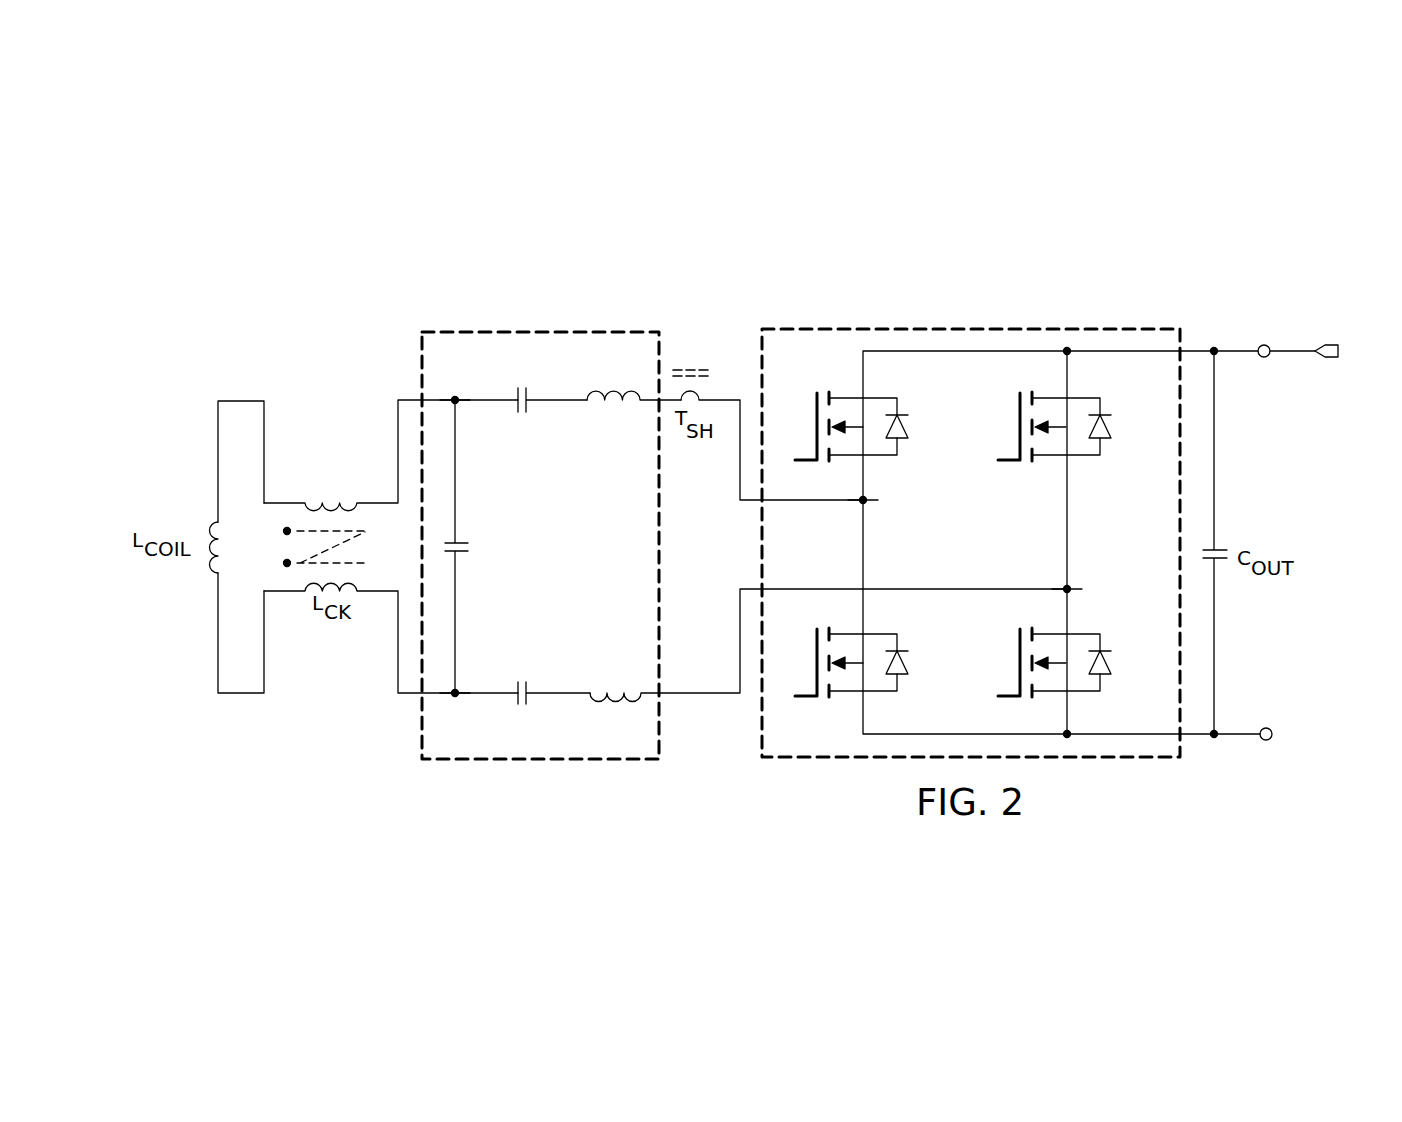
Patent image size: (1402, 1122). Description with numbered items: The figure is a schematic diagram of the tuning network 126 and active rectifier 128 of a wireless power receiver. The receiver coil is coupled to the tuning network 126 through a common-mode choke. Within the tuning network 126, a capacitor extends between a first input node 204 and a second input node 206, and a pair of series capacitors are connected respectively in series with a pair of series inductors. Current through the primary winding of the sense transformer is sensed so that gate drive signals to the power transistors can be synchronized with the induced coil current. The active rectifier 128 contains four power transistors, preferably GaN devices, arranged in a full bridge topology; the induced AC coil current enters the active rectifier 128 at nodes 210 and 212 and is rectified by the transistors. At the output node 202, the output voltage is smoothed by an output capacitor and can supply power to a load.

The tuning network 126 is at (481, 328).
The active rectifier 128 is at (1040, 323).
The output node 202 is at (1329, 344).
The first input node 204 is at (460, 404).
The second input node 206 is at (460, 697).
The node 210 is at (868, 505).
The node 212 is at (1072, 584).